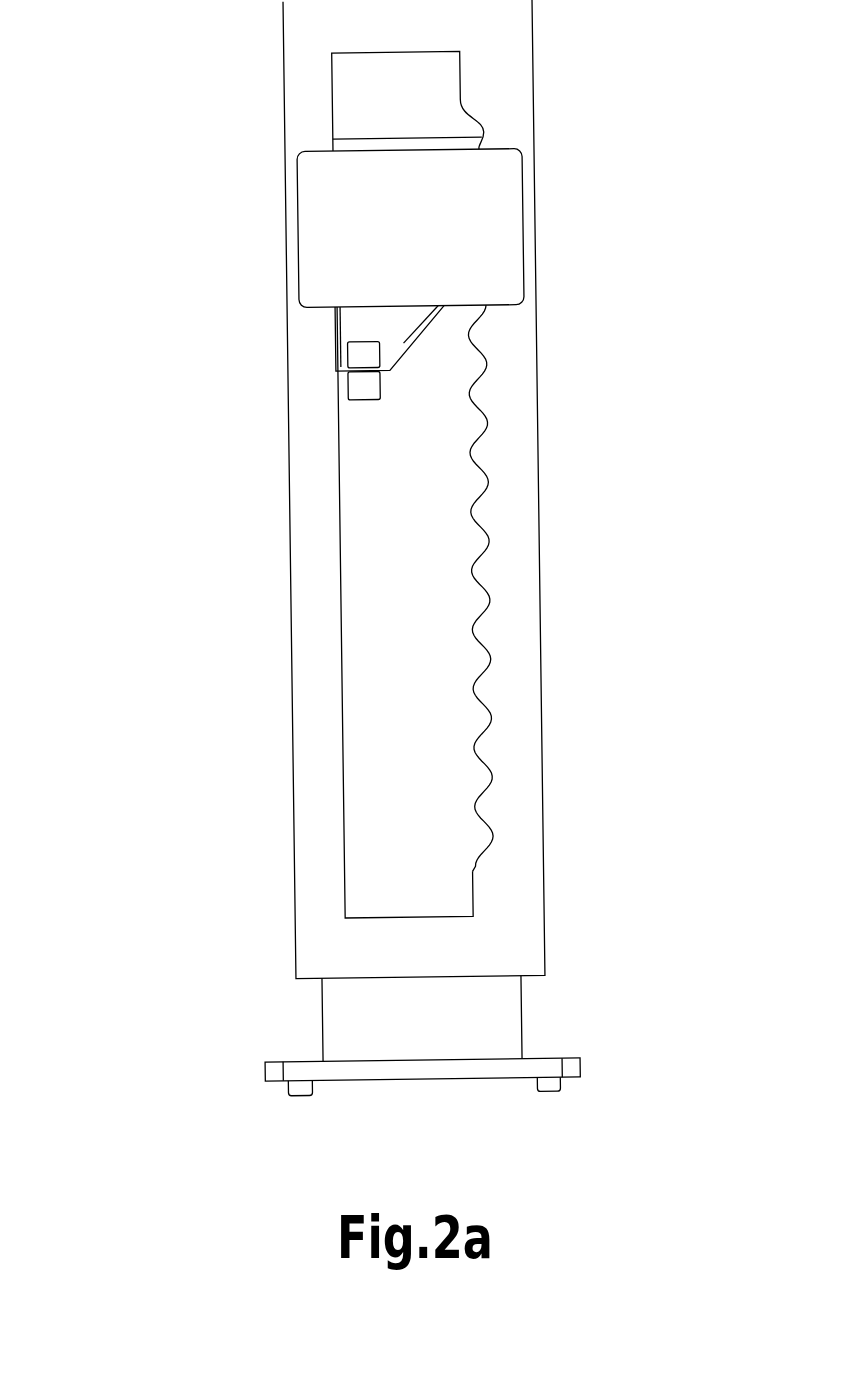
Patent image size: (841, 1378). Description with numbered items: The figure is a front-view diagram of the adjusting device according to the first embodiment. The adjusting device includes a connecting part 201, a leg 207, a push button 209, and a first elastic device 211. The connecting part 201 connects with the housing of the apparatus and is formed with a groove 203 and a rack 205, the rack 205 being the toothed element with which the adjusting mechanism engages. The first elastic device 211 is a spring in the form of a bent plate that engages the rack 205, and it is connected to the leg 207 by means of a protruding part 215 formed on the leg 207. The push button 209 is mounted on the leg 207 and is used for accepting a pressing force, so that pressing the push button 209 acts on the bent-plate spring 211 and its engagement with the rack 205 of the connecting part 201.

The connecting part 201 is at (302, 25).
The groove 203 is at (418, 90).
The rack 205 is at (483, 460).
The leg 207 is at (402, 819).
The push button 209 is at (335, 255).
The first elastic device 211 is at (337, 373).
The protruding part 215 is at (373, 353).